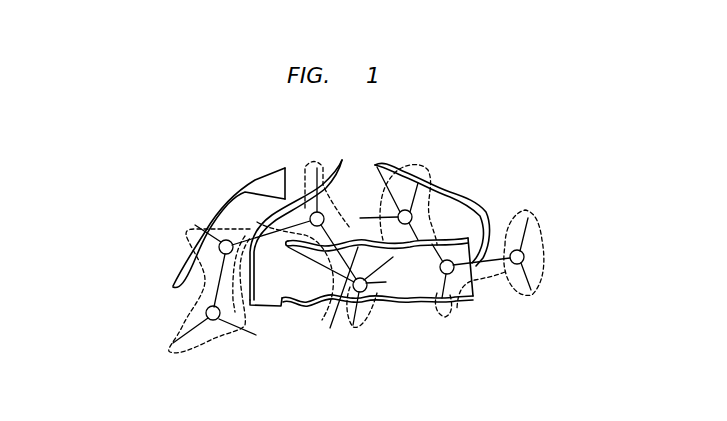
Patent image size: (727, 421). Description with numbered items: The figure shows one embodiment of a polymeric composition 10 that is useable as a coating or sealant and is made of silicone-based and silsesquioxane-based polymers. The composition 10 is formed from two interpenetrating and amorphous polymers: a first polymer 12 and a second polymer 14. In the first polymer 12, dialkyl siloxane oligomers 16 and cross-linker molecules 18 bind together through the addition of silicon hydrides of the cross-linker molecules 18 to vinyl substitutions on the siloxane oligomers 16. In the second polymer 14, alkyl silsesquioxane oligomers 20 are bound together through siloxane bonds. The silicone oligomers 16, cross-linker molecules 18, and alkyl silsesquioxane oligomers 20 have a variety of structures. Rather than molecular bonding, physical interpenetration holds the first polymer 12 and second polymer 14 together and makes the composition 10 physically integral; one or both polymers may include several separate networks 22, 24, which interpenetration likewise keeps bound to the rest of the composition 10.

The polymeric composition 10 is at (90, 200).
The first polymer 12 is at (238, 180).
The second polymer 14 is at (372, 218).
The dialkyl siloxane oligomers 16 is at (467, 206).
The cross-linker molecules 18 is at (259, 197).
The alkyl silsesquioxane oligomers 20 is at (386, 282).
The separate network 22 is at (207, 330).
The separate network 24 is at (532, 212).